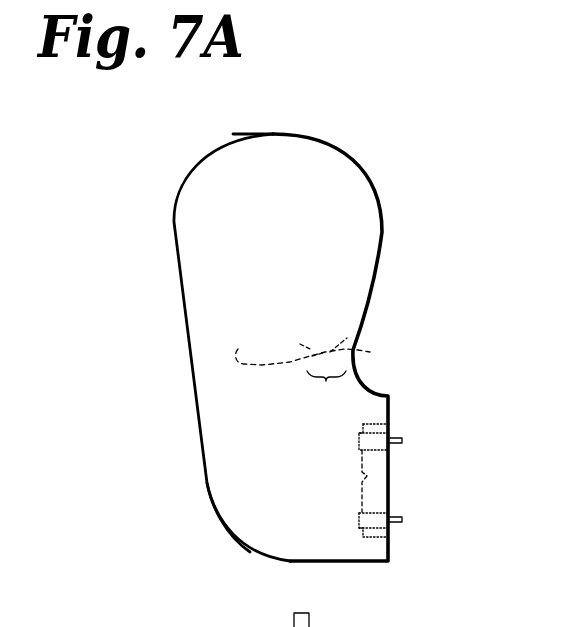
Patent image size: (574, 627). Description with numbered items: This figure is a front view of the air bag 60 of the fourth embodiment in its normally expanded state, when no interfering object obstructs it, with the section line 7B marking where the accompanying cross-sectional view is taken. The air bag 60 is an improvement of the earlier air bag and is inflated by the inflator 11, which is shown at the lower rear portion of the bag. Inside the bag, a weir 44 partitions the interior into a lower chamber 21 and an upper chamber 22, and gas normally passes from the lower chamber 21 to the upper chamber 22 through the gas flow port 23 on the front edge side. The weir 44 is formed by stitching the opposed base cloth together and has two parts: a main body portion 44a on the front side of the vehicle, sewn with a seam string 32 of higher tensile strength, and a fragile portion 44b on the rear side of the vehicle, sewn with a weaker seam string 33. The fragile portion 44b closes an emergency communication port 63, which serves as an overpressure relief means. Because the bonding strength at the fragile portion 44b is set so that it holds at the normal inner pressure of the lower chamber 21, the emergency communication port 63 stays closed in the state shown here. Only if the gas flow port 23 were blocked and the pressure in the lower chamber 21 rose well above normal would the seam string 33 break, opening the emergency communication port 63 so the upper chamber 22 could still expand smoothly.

The air bag 60 is at (403, 176).
The upper chamber 22 is at (248, 158).
The lower chamber 21 is at (238, 509).
The weir 44 is at (291, 317).
The main body portion 44a is at (323, 345).
The fragile portion 44b is at (325, 387).
The emergency communication port 63 is at (319, 348).
The seam string 33 is at (360, 334).
The seam string 32 is at (288, 364).
The gas flow port 23 is at (210, 363).
The inflator 11 is at (376, 481).
The section line 7B is at (175, 371).